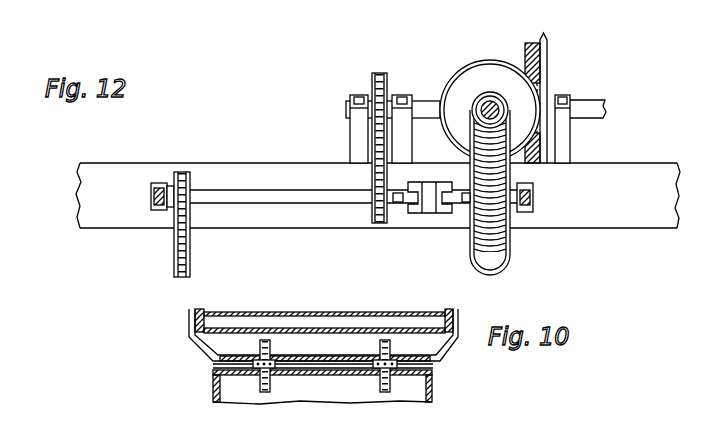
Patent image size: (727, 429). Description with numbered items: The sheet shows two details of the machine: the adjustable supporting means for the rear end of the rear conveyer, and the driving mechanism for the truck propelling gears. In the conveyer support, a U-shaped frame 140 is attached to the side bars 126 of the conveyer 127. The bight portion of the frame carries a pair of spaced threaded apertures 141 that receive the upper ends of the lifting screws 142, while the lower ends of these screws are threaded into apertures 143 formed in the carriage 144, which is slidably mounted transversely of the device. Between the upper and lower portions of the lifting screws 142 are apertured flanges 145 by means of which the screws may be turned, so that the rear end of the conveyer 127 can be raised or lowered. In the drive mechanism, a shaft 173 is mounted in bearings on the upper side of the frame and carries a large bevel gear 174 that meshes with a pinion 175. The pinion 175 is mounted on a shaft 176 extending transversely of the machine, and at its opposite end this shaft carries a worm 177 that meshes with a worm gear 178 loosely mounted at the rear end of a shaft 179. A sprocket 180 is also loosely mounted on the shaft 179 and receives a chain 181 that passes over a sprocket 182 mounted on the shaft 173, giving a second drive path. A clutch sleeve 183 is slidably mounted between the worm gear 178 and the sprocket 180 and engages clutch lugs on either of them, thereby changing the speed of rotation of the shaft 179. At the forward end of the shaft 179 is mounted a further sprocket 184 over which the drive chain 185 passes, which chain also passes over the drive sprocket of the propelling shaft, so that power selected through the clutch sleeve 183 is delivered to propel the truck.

In FIG. 10, the side bars 126 is at (455, 301).
In FIG. 10, the conveyer 127 is at (208, 304).
In FIG. 10, the U-shaped frame 140 is at (198, 350).
In FIG. 10, the threaded apertures 141 is at (268, 340).
In FIG. 10, the lifting screws 142 is at (386, 340).
In FIG. 10, the apertures 143 is at (270, 385).
In FIG. 10, the carriage 144 is at (213, 390).
In FIG. 10, the apertured flanges 145 is at (213, 367).
In FIG. 12, the shaft 173 is at (596, 100).
In FIG. 12, the large bevel gear 174 is at (547, 65).
In FIG. 12, the pinion 175 is at (486, 67).
In FIG. 12, the shaft 176 is at (480, 105).
In FIG. 12, the worm 177 is at (503, 112).
In FIG. 12, the worm gear 178 is at (510, 227).
In FIG. 12, the shaft 179 is at (288, 200).
In FIG. 12, the sprocket 180 is at (372, 212).
In FIG. 12, the chain 181 is at (372, 140).
In FIG. 12, the sprocket 182 is at (372, 90).
In FIG. 12, the clutch sleeve 183 is at (421, 214).
In FIG. 12, the sprocket 184 is at (190, 175).
In FIG. 12, the drive chain 185 is at (178, 246).